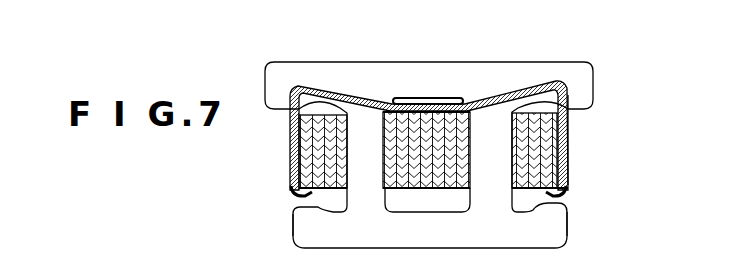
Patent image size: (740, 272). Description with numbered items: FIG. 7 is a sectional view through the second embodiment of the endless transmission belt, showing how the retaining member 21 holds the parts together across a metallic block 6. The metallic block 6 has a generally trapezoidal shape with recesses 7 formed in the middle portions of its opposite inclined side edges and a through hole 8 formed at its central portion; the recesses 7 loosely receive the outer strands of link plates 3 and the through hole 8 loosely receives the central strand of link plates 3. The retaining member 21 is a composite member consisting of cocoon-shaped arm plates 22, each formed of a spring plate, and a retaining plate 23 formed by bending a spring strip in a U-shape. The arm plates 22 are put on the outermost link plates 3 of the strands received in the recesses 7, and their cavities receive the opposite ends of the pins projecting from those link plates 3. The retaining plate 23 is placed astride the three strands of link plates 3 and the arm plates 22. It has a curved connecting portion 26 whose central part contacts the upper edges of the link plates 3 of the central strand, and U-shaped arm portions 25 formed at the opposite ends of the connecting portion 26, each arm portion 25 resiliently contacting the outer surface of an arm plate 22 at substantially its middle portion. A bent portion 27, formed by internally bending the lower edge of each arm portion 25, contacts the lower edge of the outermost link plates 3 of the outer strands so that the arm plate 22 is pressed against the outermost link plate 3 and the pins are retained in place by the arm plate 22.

The link plate 3 is at (430, 190).
The second metallic block 6 is at (489, 60).
The recess 7 is at (333, 203).
The through hole 8 is at (400, 203).
The retaining member 21 is at (288, 195).
The arm plate 22 is at (300, 153).
The retaining plate 23 is at (363, 98).
The U-shaped arm portion 25 is at (570, 148).
The connecting portion 26 is at (427, 98).
The bent portion 27 is at (454, 218).